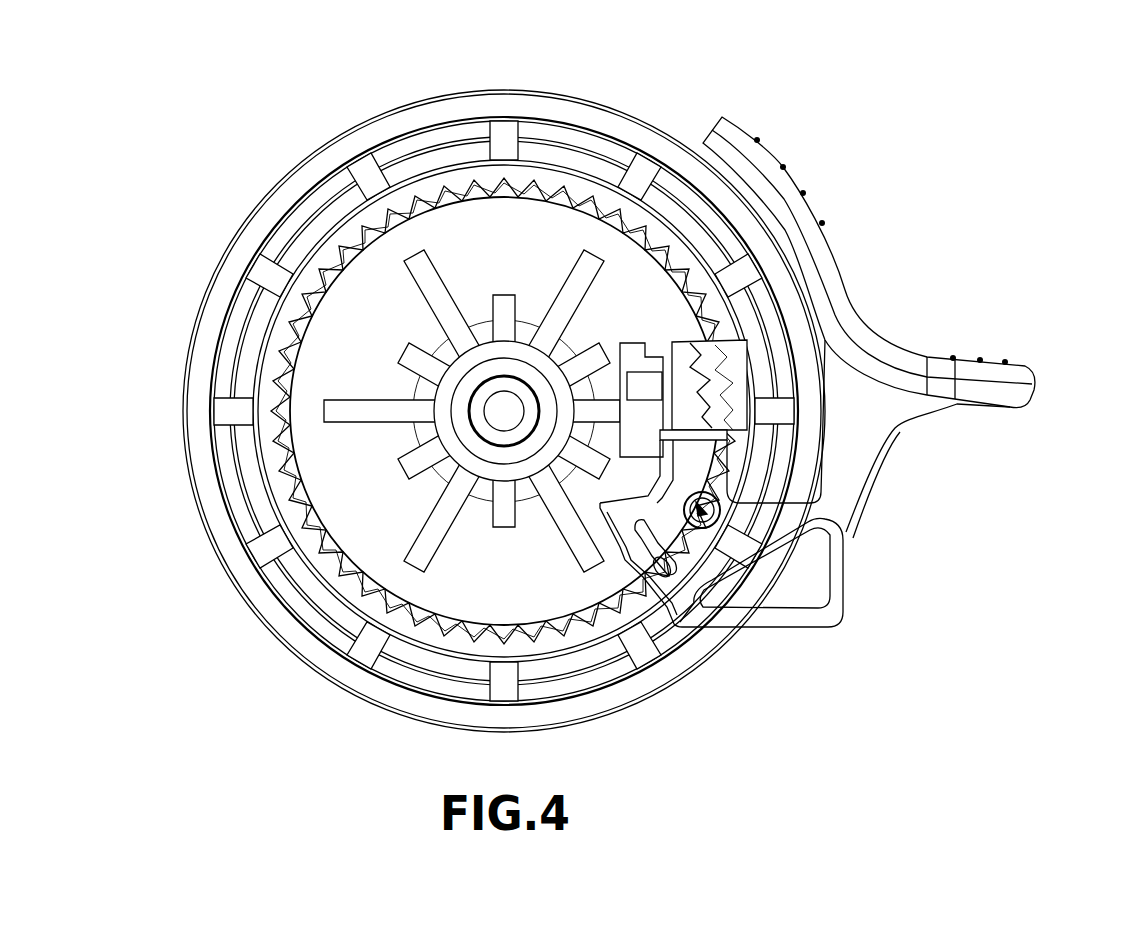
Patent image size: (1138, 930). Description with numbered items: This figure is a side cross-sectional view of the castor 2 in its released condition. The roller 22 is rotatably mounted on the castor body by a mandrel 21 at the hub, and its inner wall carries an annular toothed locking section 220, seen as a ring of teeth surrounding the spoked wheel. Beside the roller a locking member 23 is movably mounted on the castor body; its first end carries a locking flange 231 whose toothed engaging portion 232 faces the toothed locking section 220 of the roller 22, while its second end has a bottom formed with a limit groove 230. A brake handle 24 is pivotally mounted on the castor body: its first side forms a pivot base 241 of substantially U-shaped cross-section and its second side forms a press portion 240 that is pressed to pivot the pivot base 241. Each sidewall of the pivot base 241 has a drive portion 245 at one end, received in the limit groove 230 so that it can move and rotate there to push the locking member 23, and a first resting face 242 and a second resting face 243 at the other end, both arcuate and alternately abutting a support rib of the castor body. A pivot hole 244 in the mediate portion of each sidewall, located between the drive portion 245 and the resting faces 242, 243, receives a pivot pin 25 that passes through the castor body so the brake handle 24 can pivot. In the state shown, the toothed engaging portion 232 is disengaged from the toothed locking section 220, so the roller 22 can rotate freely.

The castor 2 is at (846, 422).
The mandrel 21 is at (505, 408).
The roller 22 is at (583, 120).
The locking member 23 is at (840, 322).
The brake handle 24 is at (1040, 380).
The pivot pin 25 is at (712, 520).
The toothed locking section 220 is at (810, 321).
The limit groove 230 is at (650, 345).
The locking flange 231 is at (690, 322).
The toothed engaging portion 232 is at (861, 366).
The press portion 240 is at (765, 160).
The pivot base 241 is at (845, 545).
The first resting face 242 is at (622, 535).
The second resting face 243 is at (648, 590).
The pivot hole 244 is at (704, 525).
The drive portion 245 is at (794, 466).